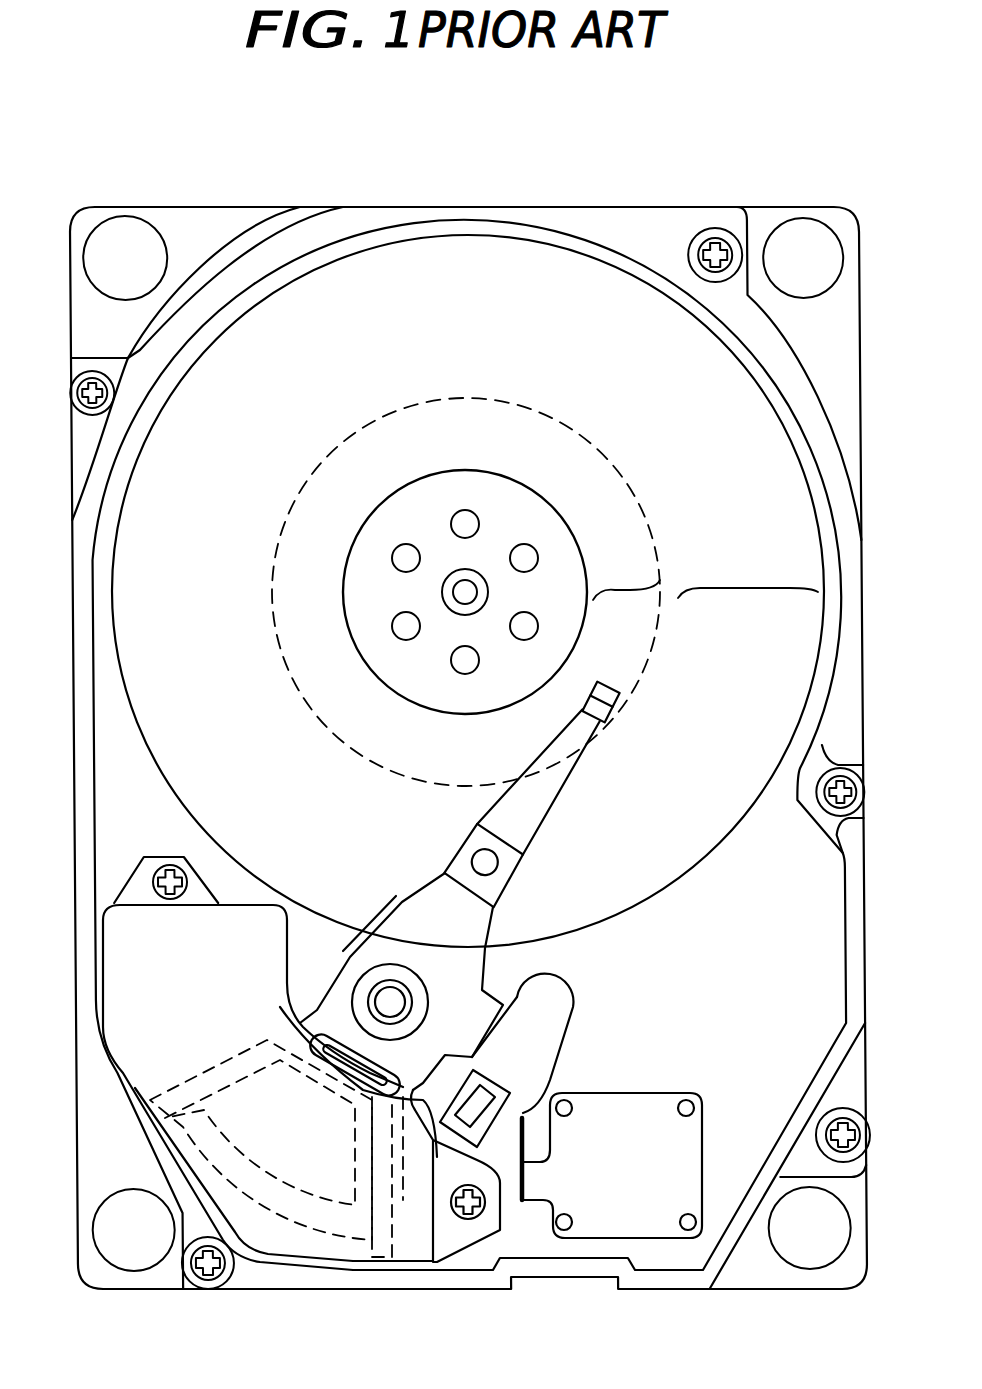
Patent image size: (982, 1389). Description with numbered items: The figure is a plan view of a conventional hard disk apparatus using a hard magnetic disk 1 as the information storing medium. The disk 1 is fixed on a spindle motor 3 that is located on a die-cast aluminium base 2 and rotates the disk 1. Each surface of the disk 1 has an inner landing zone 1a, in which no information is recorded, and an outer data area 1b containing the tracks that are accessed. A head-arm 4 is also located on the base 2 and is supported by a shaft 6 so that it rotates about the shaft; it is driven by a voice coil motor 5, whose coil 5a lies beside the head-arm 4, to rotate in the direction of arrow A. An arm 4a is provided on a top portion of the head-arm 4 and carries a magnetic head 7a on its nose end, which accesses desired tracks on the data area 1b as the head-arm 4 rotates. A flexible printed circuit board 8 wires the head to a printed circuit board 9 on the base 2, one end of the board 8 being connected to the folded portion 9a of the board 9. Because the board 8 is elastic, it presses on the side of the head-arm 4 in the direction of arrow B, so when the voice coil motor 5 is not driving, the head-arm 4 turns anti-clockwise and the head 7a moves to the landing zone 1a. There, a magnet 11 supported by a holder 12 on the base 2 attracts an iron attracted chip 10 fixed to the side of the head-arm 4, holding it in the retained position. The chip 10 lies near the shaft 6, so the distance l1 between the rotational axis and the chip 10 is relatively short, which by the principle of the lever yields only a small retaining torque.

The hard magnetic disk 1 is at (722, 858).
The landing zone 1a is at (626, 575).
The data area 1b is at (748, 572).
The base 2 is at (657, 1257).
The spindle motor 3 is at (412, 510).
The head-arm 4 is at (331, 937).
The arm 4a is at (548, 817).
The voice coil motor 5 is at (278, 1218).
The coil 5a is at (343, 1258).
The shaft 6 is at (386, 1002).
The magnetic head 7a is at (613, 692).
The flexible printed circuit board 8 is at (565, 1003).
The printed circuit board 9 is at (653, 1108).
The folded portion 9a is at (522, 1195).
The attracted chip 10 is at (448, 1176).
The magnet 11 is at (477, 1097).
The holder 12 is at (485, 1124).
The arrow A is at (695, 785).
The arrow B is at (495, 1022).
The distance l1 is at (392, 1003).